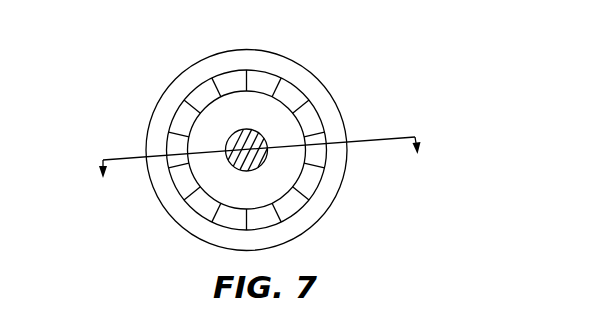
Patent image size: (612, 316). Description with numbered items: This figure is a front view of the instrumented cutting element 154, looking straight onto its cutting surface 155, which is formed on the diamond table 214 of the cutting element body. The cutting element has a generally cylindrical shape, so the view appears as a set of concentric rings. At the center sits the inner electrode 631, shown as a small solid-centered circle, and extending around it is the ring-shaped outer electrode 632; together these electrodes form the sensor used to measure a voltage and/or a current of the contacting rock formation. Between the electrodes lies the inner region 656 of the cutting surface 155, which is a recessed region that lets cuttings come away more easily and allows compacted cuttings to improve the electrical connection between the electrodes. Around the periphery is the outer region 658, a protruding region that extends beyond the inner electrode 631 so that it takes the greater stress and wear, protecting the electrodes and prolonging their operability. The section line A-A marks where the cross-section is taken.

The instrumented cutting element 154 is at (462, 71).
The cutting surface 155 is at (335, 115).
The diamond table 214 is at (347, 181).
The inner electrode 631 is at (240, 160).
The outer electrode 632 is at (292, 98).
The inner region 656 is at (172, 151).
The outer region 658 is at (193, 73).